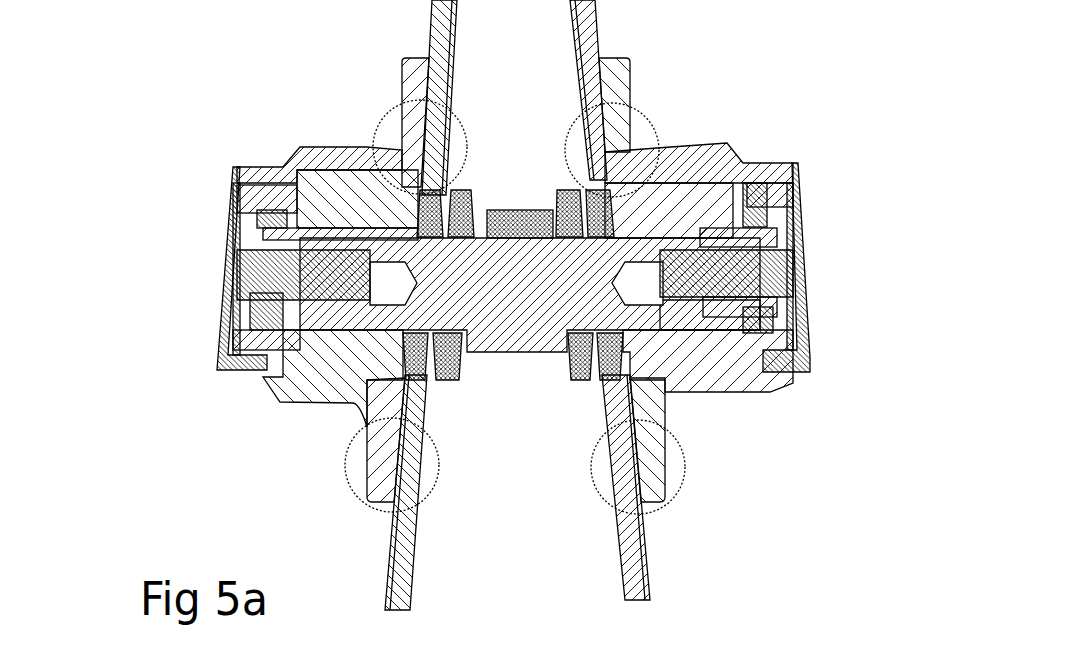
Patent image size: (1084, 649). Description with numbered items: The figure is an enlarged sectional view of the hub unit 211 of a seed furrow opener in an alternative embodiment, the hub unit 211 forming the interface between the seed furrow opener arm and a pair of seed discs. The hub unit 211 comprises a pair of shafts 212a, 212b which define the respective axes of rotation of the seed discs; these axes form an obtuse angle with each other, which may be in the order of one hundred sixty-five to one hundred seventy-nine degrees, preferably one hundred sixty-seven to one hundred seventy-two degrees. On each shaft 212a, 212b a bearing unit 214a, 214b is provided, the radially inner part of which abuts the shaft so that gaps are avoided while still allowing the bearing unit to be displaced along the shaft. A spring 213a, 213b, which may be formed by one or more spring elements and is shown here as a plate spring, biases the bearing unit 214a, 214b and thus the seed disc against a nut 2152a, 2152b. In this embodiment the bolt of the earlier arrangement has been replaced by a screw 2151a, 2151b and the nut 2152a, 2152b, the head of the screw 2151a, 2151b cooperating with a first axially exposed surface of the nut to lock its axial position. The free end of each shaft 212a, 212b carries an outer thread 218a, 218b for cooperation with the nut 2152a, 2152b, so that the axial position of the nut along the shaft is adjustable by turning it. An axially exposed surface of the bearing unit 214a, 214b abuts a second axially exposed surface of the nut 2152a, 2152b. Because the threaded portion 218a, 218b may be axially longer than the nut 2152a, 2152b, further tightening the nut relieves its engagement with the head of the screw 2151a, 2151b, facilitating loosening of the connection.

The hub unit 211 is at (722, 112).
The shaft 212a is at (332, 230).
The shaft 212b is at (675, 315).
The spring 213a is at (395, 352).
The spring 213b is at (588, 360).
The bearing unit 214a is at (358, 382).
The bearing unit 214b is at (663, 365).
The screw 2151a is at (290, 276).
The screw 2151b is at (743, 275).
The nut 2152a is at (278, 217).
The nut 2152b is at (748, 214).
The outer thread 218a is at (262, 224).
The outer thread 218b is at (753, 231).